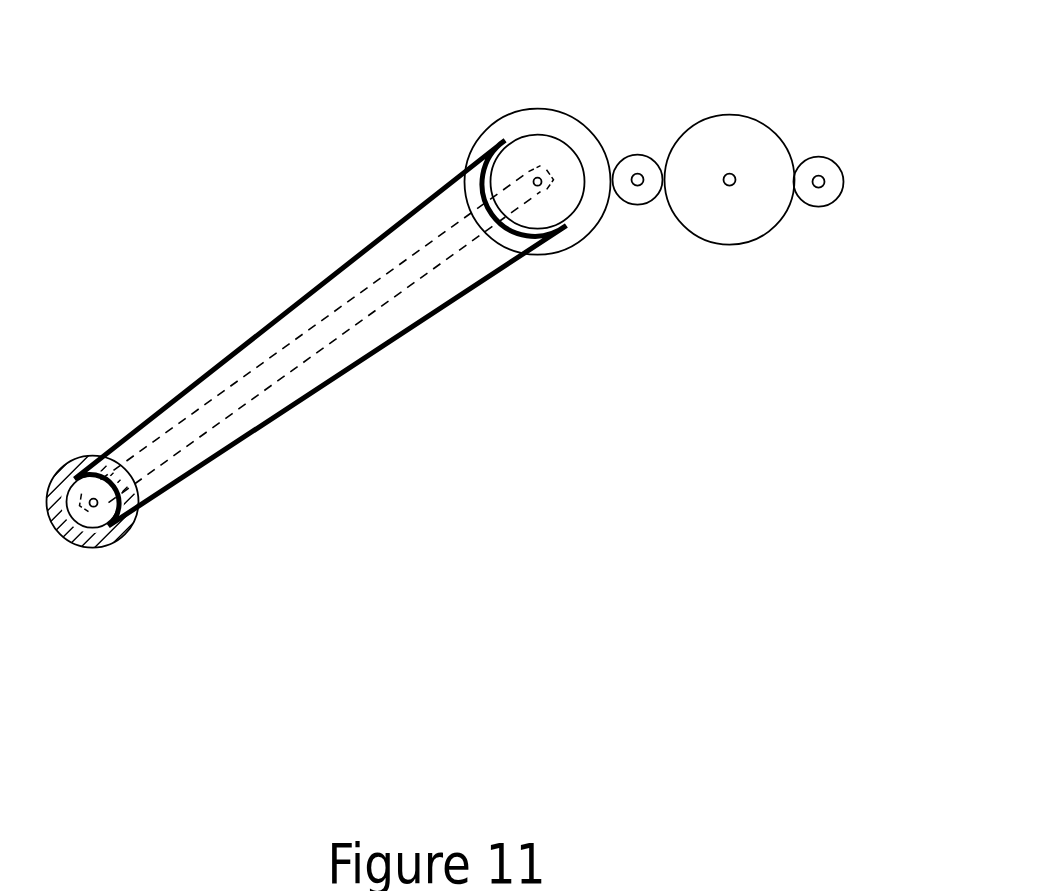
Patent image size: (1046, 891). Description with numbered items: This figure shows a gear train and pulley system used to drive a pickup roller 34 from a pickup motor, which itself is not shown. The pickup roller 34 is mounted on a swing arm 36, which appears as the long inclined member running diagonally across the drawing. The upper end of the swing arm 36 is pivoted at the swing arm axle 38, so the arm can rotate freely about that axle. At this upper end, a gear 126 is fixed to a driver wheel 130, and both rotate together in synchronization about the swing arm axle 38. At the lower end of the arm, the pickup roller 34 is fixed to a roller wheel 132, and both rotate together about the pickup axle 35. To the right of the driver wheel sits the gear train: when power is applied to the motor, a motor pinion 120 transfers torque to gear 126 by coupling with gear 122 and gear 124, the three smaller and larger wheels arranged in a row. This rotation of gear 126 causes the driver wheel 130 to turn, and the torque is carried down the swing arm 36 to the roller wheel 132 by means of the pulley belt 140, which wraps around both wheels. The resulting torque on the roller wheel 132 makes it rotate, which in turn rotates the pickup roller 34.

The motor pinion 120 is at (832, 176).
The gear 122 is at (753, 143).
The gear 124 is at (633, 165).
The gear 126 is at (550, 118).
The driver wheel 130 is at (518, 153).
The roller wheel 132 is at (78, 483).
The pulley belt 140 is at (338, 270).
The pickup roller 34 is at (56, 527).
The pickup axle 35 is at (93, 504).
The swing arm 36 is at (275, 385).
The swing arm axle 38 is at (542, 184).